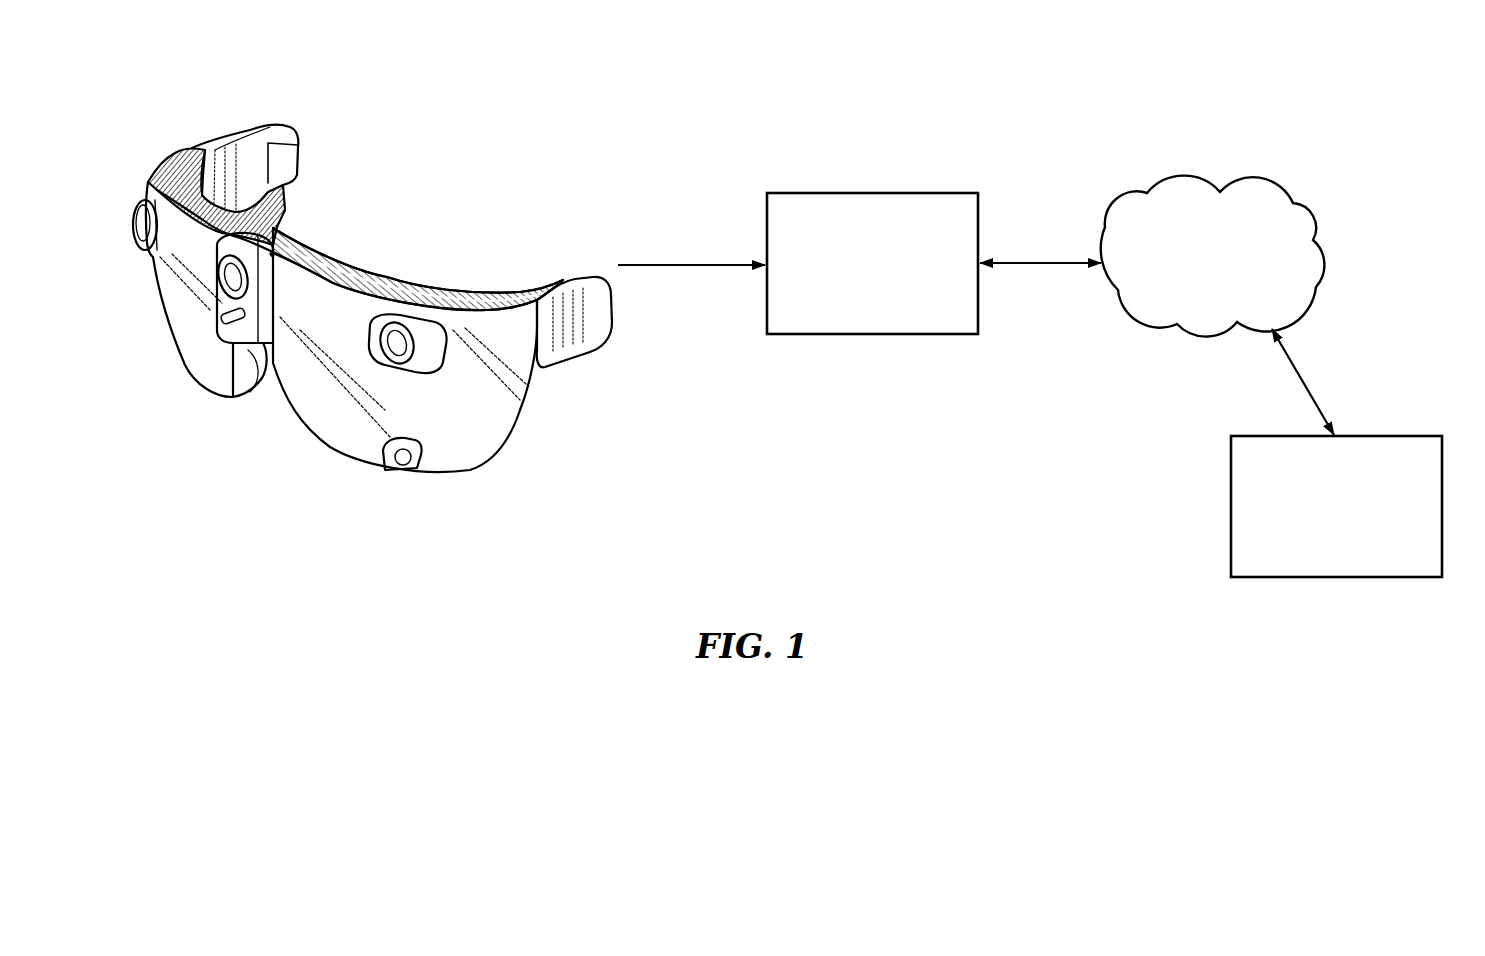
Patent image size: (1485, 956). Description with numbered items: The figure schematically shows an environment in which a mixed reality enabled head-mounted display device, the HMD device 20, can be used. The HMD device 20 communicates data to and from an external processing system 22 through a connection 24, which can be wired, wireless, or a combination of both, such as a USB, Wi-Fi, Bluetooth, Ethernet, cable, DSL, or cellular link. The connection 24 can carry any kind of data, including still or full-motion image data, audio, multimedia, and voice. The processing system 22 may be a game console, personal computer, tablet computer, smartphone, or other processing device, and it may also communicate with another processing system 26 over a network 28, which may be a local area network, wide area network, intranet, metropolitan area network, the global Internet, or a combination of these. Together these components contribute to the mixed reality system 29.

The HMD device 20 is at (176, 146).
The processing system 22 is at (872, 263).
The connection 24 is at (687, 263).
The processing system (remote) 26 is at (1336, 506).
The network 28 is at (1213, 256).
The mixed reality system 29 is at (889, 466).